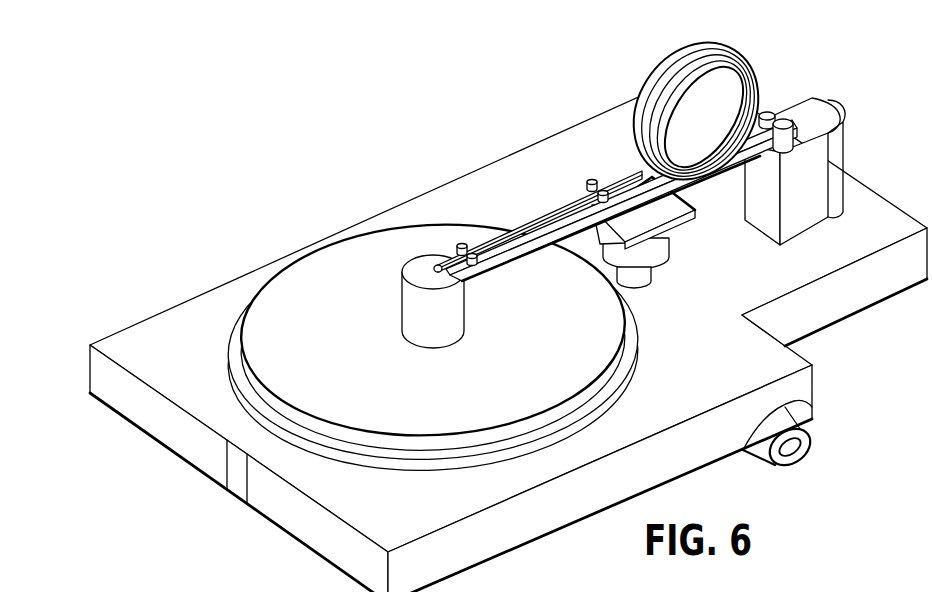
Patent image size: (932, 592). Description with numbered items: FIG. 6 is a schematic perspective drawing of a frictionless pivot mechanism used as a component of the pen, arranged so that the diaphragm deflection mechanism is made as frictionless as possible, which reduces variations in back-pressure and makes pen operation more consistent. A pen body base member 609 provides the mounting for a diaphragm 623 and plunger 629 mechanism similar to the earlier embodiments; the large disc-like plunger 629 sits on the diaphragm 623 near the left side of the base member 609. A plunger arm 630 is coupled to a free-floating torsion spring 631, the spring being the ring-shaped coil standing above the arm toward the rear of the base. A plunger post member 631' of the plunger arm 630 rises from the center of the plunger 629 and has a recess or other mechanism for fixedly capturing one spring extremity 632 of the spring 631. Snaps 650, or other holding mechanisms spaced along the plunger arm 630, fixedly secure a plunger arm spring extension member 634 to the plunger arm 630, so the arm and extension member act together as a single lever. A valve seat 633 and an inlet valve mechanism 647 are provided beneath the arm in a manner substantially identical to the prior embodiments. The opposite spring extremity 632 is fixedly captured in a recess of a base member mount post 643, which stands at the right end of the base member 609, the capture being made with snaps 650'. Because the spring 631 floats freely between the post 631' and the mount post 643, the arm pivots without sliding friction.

The pen body base member 609 is at (483, 542).
The diaphragm 623 is at (625, 383).
The plunger 629 is at (363, 322).
The plunger post member 631' is at (470, 301).
The valve seat 633 is at (660, 258).
The inlet valve mechanism 647 is at (646, 285).
The plunger arm 630 is at (653, 202).
The base member mount post 643 is at (843, 157).
The spring extremity 632 is at (738, 153).
The plunger arm spring extension member 634 is at (558, 213).
The snaps 650 is at (693, 352).
The free-floating torsion spring 631 is at (691, 111).
The snaps 650' is at (797, 100).